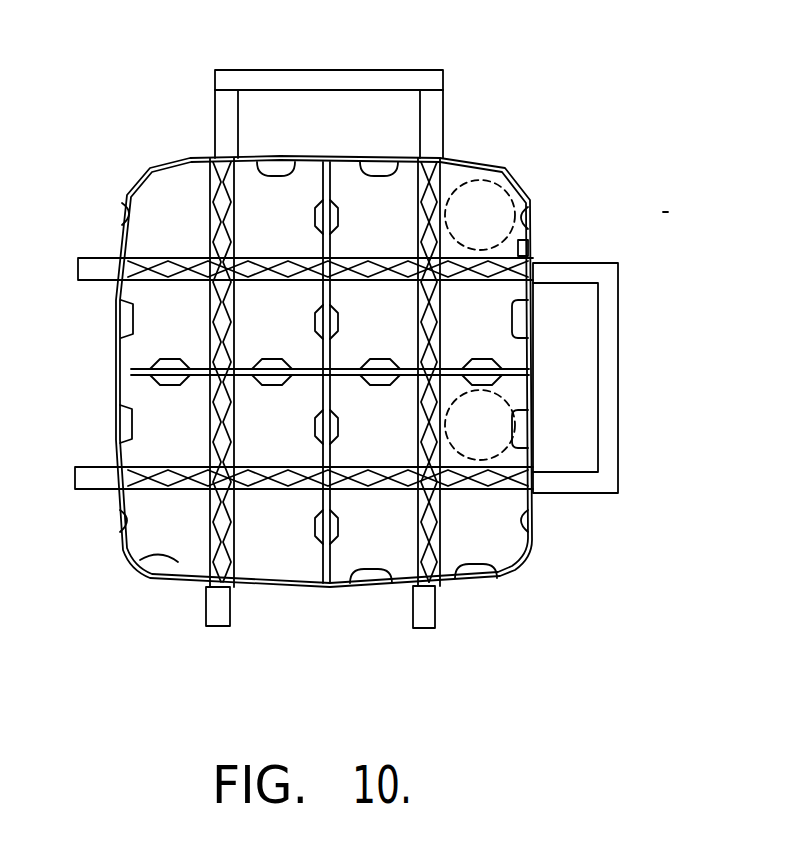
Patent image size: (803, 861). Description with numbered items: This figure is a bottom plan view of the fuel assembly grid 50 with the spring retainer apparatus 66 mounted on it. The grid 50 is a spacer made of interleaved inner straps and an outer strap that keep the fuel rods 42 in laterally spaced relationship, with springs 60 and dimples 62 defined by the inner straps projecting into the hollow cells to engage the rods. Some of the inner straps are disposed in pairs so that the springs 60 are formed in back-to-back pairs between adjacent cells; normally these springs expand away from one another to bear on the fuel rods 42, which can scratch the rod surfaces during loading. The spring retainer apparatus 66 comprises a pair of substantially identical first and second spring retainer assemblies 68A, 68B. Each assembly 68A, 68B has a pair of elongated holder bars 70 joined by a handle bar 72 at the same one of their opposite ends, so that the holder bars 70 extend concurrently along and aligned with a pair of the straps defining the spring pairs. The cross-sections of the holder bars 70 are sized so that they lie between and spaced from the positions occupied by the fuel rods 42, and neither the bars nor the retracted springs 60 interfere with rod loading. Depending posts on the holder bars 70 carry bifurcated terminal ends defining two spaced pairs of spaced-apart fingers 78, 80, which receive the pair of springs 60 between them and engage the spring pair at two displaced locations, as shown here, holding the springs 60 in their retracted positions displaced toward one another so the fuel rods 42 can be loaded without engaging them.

The spring retainer apparatus 66 is at (570, 80).
The fuel assembly grid 50 is at (520, 182).
The second spring retainer assembly 68B is at (440, 319).
The first spring retainer assembly 68A is at (710, 313).
The handle bar 72 is at (298, 70).
The holder bar 70 is at (215, 120).
The finger 80 is at (235, 212).
The finger 78 is at (222, 232).
The spring 60 is at (470, 305).
The dimple 62 is at (270, 360).
The fuel rod 42 is at (545, 228).